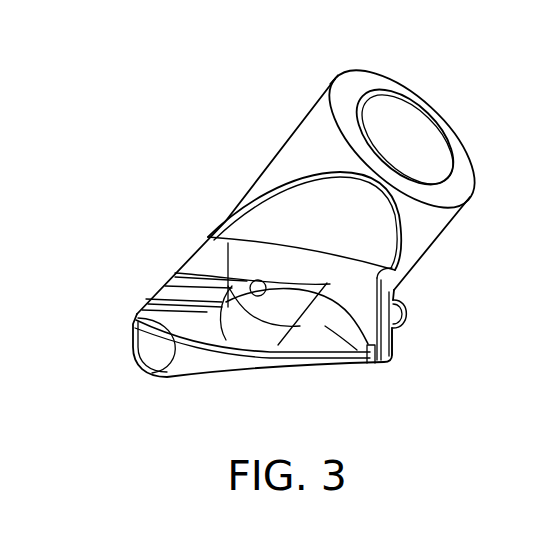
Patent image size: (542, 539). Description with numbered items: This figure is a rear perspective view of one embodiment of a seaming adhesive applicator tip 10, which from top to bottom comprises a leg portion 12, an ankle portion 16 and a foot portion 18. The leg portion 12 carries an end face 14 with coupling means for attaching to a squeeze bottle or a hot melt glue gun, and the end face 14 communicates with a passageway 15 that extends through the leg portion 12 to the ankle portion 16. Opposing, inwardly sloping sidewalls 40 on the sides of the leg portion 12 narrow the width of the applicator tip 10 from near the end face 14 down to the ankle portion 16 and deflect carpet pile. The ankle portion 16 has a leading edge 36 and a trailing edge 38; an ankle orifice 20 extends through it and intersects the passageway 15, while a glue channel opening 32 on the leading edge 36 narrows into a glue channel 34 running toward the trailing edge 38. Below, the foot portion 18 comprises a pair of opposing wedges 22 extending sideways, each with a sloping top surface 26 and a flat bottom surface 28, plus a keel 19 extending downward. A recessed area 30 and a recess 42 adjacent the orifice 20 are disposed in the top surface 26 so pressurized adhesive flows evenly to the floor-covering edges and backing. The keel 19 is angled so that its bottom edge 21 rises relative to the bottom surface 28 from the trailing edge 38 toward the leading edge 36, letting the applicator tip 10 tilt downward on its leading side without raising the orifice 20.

The seaming adhesive applicator tip 10 is at (208, 105).
The leg portion 12 is at (307, 113).
The end face 14 is at (401, 74).
The passageway 15 is at (408, 138).
The ankle portion 16 is at (190, 224).
The foot portion 18 is at (174, 388).
The keel 19 is at (310, 362).
The ankle orifice 20 is at (258, 280).
The bottom edge 21 is at (267, 373).
The wedges 22 is at (409, 306).
The sloping top surface 26 is at (177, 320).
The flat bottom surface 28 is at (160, 360).
The recessed area 30 is at (175, 282).
The glue channel opening 32 is at (400, 292).
The glue channel 34 is at (194, 275).
The leading edge 36 is at (432, 334).
The trailing edge 38 is at (134, 258).
The sloping sidewalls 40 is at (364, 230).
The recess 42 is at (228, 340).